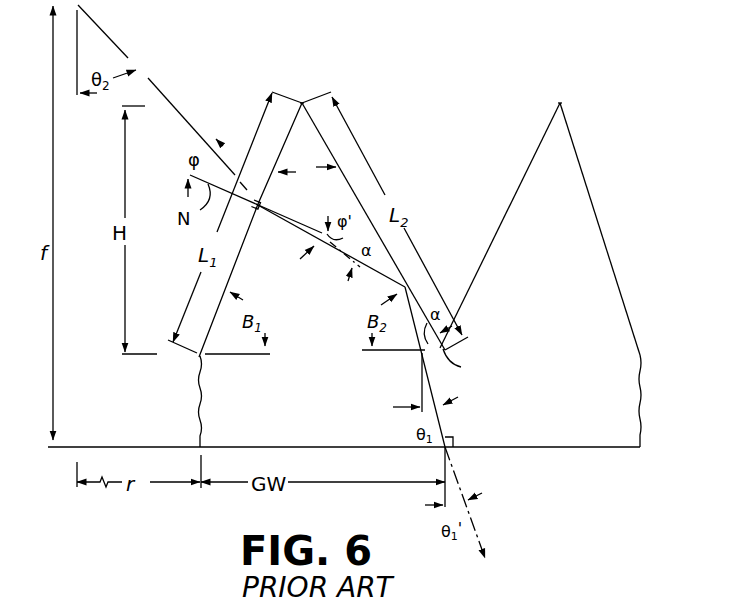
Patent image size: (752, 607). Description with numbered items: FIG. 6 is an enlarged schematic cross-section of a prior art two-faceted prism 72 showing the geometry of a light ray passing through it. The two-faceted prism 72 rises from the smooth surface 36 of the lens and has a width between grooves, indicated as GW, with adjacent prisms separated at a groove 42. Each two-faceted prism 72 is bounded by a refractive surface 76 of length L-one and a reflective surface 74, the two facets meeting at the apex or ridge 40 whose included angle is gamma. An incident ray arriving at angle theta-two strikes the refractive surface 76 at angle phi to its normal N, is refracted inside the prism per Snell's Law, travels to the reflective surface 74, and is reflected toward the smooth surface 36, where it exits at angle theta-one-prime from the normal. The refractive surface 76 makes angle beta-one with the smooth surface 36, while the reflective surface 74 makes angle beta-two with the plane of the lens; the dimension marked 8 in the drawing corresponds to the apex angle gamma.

The smooth surface 36 is at (344, 470).
The two-faceted prism 72 is at (322, 316).
The refractive surface 76 is at (287, 132).
The reflective surface 74 is at (328, 145).
The apex or ridge 40 is at (302, 99).
The groove valley 42 is at (467, 367).
The apex angle 8 is at (307, 175).